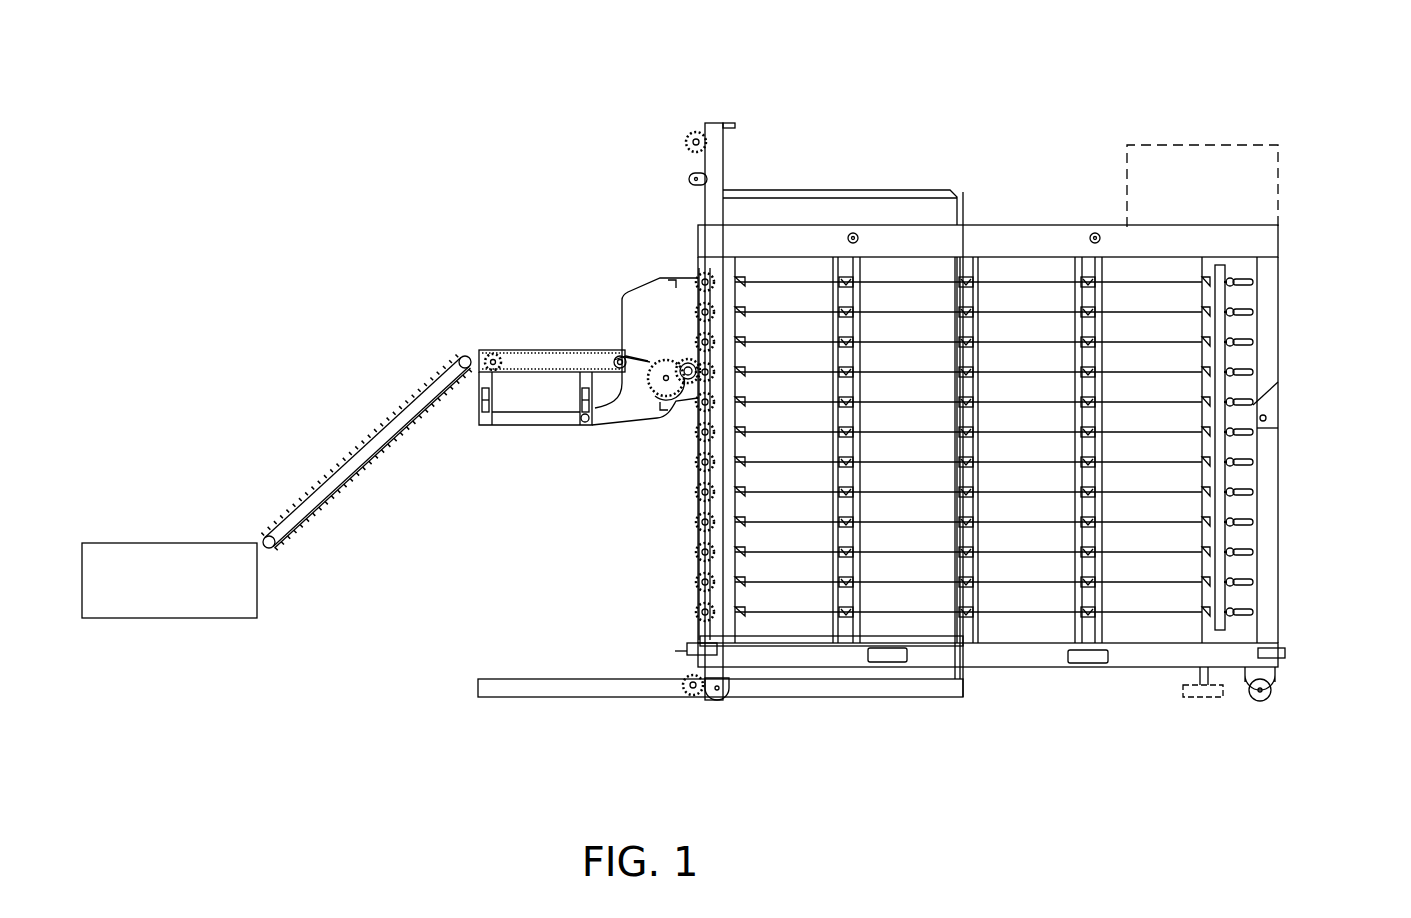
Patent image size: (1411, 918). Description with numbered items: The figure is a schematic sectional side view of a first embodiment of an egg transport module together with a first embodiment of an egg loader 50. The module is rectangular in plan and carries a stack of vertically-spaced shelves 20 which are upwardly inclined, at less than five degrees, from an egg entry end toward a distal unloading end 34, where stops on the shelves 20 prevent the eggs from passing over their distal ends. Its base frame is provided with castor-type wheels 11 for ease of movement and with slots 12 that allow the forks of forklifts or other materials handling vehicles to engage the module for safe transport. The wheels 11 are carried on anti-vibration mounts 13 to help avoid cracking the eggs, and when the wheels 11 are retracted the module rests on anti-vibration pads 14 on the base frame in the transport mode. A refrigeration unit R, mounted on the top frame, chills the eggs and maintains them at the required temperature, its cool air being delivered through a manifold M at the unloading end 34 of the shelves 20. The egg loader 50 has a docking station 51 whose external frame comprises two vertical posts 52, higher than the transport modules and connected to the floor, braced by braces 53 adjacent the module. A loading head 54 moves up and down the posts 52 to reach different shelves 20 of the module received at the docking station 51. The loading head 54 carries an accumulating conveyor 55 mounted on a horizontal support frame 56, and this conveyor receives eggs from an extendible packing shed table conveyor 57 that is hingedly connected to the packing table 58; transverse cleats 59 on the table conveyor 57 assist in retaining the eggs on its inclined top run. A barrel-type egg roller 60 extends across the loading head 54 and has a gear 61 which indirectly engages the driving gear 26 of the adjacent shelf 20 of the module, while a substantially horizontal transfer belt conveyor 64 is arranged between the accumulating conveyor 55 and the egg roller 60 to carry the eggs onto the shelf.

The castor-type wheels 11 is at (1270, 695).
The slots 12 is at (1085, 663).
The anti-vibration mounts 13 is at (1285, 680).
The anti-vibration pads 14 is at (1203, 697).
The shelves 20 is at (1000, 336).
The driving gear 26 is at (712, 371).
The distal unloading end 34 is at (1283, 335).
The egg loader 50 is at (593, 372).
The docking station 51 is at (933, 435).
The vertical posts 52 is at (713, 165).
The braces 53 is at (960, 208).
The loading head 54 is at (672, 416).
The accumulating conveyor 55 is at (560, 343).
The horizontal support frame 56 is at (527, 418).
The extendible packing shed table conveyor 57 is at (344, 452).
The packing table 58 is at (169, 580).
The transverse cleats 59 is at (365, 440).
The egg roller 60 is at (668, 355).
The gear 61 is at (657, 392).
The transfer belt conveyor 64 is at (640, 370).
The manifold M is at (1240, 272).
The refrigeration unit R is at (1202, 186).